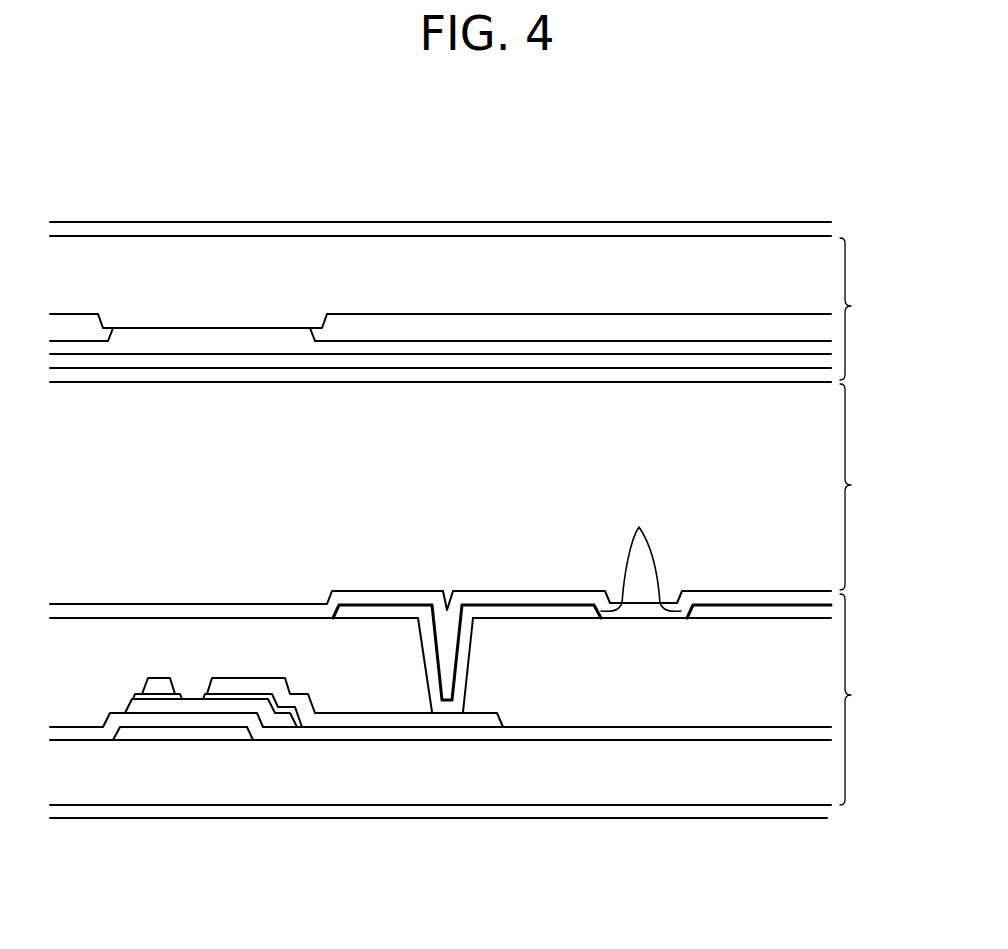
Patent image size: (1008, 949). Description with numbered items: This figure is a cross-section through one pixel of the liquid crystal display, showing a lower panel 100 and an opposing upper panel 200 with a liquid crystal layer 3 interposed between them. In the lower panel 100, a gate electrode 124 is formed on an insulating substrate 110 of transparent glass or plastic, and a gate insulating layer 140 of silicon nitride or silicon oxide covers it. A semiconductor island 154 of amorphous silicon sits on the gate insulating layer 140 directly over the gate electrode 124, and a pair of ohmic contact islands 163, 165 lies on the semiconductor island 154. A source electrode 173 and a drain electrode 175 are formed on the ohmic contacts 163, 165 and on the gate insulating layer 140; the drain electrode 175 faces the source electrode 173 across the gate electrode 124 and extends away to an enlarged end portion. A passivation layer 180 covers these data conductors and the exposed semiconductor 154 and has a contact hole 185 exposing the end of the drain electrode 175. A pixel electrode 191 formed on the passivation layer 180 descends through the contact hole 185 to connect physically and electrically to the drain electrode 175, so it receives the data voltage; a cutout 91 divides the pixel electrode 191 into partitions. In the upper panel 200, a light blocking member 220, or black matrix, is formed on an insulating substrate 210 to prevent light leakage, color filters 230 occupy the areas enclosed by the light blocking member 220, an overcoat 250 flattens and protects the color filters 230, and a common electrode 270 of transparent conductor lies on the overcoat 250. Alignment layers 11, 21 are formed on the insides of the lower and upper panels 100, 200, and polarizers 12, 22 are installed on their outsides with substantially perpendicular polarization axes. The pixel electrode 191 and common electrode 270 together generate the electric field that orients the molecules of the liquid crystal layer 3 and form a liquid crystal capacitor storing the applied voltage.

The polarizer 22 is at (831, 226).
The insulating substrate 210 is at (350, 267).
The light blocking member 220 is at (190, 323).
The color filter 230 is at (443, 330).
The overcoat 250 is at (535, 348).
The common electrode 270 is at (630, 360).
The alignment layer 21 is at (717, 382).
The upper panel 200 is at (865, 309).
The liquid crystal layer 3 is at (854, 487).
The lower panel 100 is at (866, 699).
The alignment layer 11 is at (373, 597).
The first central cutout 91 is at (641, 555).
The pixel electrode 191 is at (400, 615).
The passivation layer 180 is at (565, 697).
The contact hole 185 is at (425, 645).
The drain electrode 175 is at (228, 686).
The source electrode 173 is at (150, 685).
The ohmic contact island 163 is at (160, 696).
The ohmic contact island 165 is at (242, 696).
The semiconductor island 154 is at (175, 706).
The gate insulating layer 140 is at (488, 730).
The gate electrode 124 is at (190, 733).
The insulating substrate 110 is at (335, 777).
The polarizer 12 is at (828, 813).